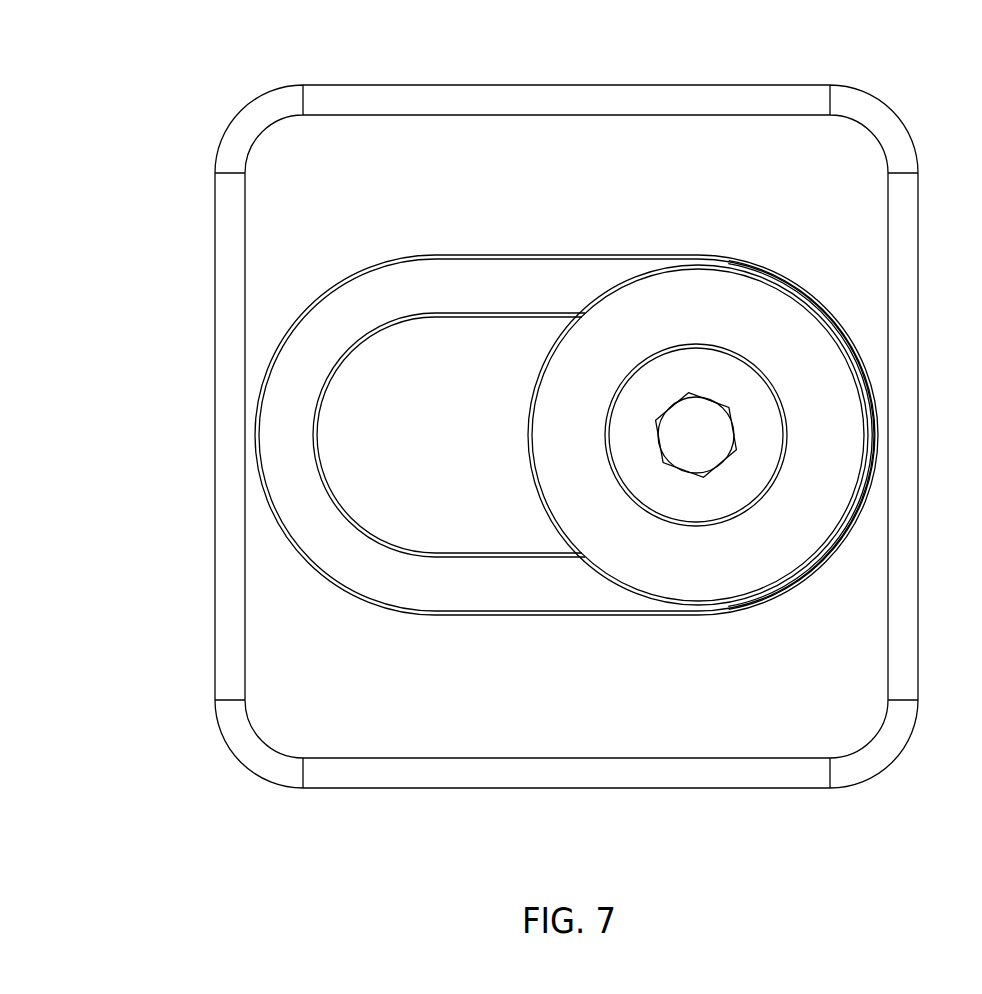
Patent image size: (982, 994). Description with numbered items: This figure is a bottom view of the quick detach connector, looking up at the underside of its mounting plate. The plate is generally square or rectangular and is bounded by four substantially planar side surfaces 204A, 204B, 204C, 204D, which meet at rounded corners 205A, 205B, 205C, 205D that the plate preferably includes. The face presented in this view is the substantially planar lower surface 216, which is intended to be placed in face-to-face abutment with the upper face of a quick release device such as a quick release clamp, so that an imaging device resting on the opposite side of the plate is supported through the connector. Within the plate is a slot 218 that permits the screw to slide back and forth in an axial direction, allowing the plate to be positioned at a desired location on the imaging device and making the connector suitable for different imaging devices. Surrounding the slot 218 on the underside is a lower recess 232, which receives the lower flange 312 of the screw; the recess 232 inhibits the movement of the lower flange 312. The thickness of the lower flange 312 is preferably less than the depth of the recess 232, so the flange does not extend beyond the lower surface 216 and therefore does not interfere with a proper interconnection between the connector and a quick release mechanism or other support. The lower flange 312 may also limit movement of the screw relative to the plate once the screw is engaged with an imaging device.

The side surface 204A is at (919, 466).
The side surface 204B is at (525, 792).
The side surface 204C is at (214, 388).
The side surface 204D is at (582, 84).
The rounded corner 205A is at (889, 769).
The rounded corner 205B is at (236, 759).
The rounded corner 205C is at (240, 104).
The rounded corner 205D is at (907, 126).
The lower surface 216 is at (569, 435).
The slot 218 is at (414, 481).
The lower recess 232 is at (476, 435).
The lower flange 312 is at (703, 435).